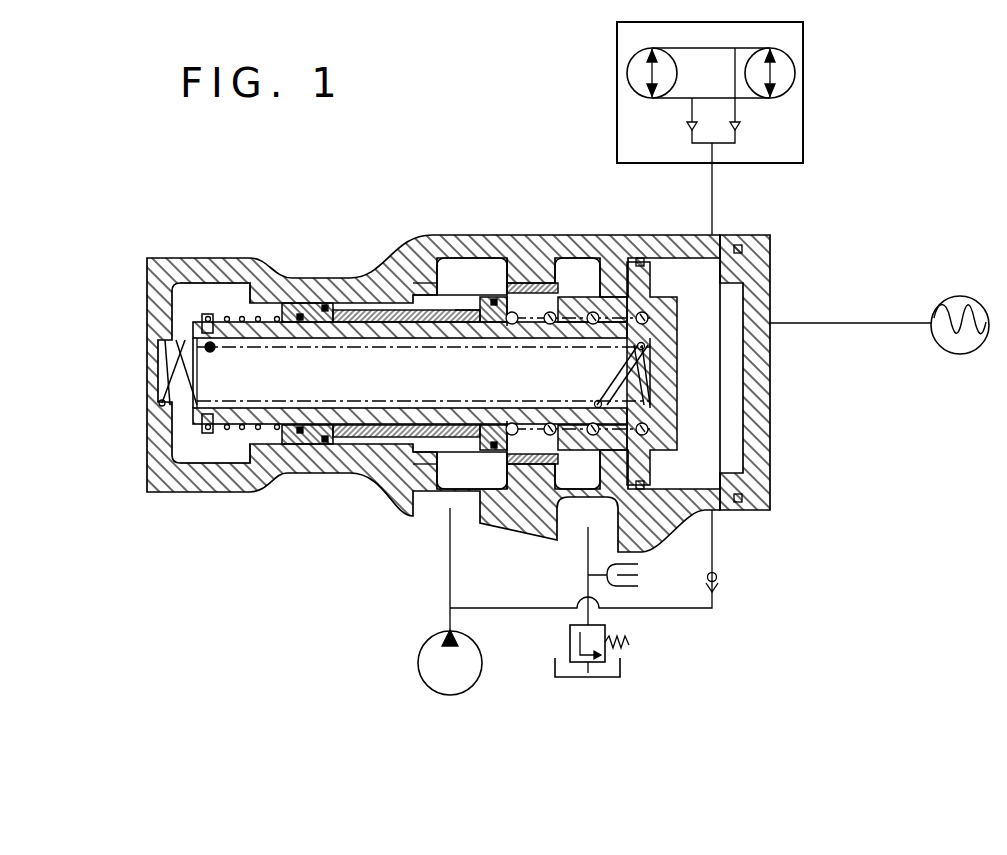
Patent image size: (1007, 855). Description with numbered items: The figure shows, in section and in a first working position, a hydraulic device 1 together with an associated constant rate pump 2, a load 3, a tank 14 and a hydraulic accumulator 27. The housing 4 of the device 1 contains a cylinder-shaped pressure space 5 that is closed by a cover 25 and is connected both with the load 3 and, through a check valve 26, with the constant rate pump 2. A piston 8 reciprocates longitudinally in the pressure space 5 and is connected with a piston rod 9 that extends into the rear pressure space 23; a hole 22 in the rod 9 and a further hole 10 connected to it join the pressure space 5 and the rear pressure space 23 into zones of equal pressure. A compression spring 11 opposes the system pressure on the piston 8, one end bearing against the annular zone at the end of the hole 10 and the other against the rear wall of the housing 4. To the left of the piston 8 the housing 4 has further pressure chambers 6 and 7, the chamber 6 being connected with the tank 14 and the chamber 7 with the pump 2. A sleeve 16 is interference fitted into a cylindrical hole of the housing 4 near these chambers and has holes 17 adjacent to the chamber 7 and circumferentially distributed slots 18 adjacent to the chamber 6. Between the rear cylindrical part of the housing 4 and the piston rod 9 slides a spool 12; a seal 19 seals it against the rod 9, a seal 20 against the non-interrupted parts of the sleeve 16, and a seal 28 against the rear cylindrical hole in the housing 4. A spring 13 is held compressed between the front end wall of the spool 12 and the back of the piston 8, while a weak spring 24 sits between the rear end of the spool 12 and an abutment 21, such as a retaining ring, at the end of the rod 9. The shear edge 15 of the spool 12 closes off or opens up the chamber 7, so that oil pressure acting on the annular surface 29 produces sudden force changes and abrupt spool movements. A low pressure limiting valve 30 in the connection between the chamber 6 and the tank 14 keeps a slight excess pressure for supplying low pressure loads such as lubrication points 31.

The device 1 is at (322, 544).
The constant rate pump 2 is at (433, 690).
The load 3 is at (804, 147).
The housing 4 is at (433, 244).
The pressure space 5 is at (703, 298).
The pressure chamber 6 is at (579, 290).
The pressure chamber 7 is at (494, 290).
The piston 8 is at (637, 476).
The piston rod 9 is at (250, 328).
The hole 10 is at (193, 357).
The spring 11 is at (213, 352).
The spool 12 is at (382, 311).
The spring 13 is at (549, 310).
The tank 14 is at (597, 680).
The shear edge 15 is at (528, 322).
The sleeve 16 is at (521, 282).
The holes 17 is at (471, 290).
The slots 18 is at (589, 288).
The seal 19 is at (296, 325).
The seal 20 is at (508, 298).
The abutment 21 is at (206, 313).
The hole 22 is at (668, 375).
The rear pressure space 23 is at (188, 297).
The weak spring 24 is at (230, 316).
The cover 25 is at (760, 432).
The check valve 26 is at (722, 584).
The hydraulic accumulator 27 is at (962, 350).
The seal 28 is at (327, 304).
The annular surface 29 is at (467, 319).
The low pressure limiting valve 30 is at (568, 642).
The lubrication points 31 is at (637, 587).